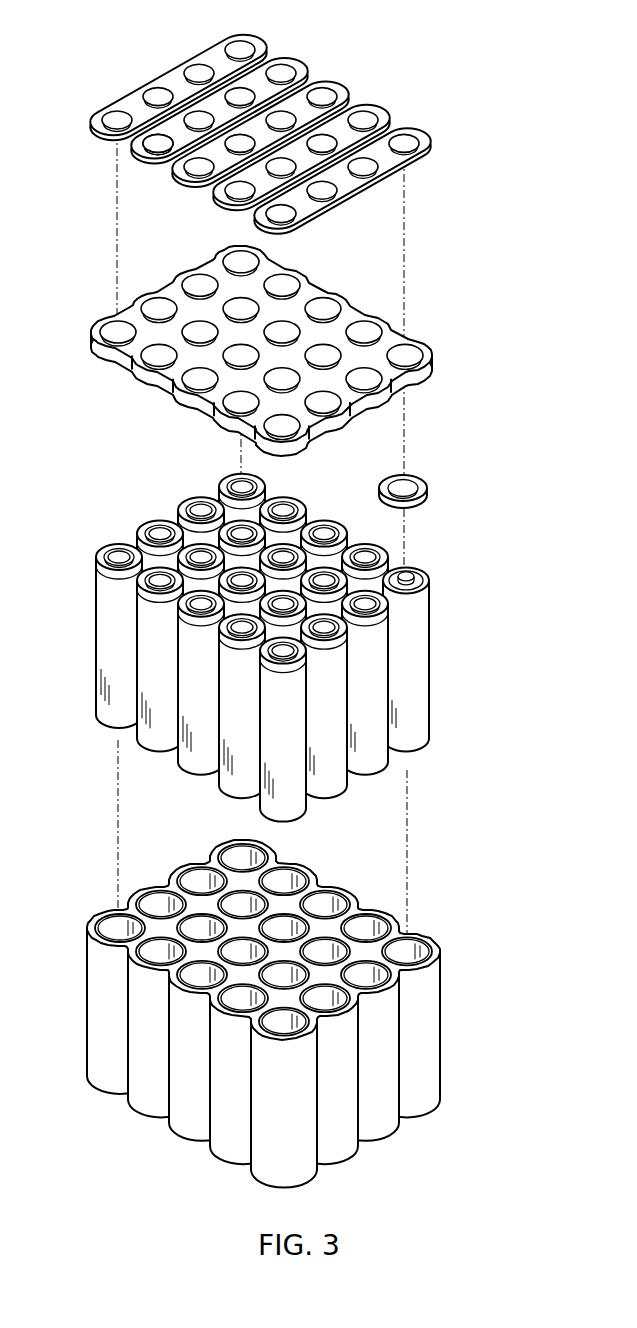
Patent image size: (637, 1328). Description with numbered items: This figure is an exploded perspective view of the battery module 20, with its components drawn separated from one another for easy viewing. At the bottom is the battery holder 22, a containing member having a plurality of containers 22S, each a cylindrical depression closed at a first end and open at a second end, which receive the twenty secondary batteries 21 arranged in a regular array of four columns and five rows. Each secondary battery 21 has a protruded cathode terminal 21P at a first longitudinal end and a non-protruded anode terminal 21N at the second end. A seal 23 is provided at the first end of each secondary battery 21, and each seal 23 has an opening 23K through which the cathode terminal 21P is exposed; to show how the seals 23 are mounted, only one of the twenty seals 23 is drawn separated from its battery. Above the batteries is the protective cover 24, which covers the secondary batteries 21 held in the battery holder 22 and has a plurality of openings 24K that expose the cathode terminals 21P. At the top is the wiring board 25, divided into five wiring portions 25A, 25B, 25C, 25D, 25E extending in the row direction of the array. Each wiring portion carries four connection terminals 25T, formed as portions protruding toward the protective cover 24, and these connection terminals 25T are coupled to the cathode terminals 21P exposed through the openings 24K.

The battery module 20 is at (286, 604).
The secondary batteries 21 is at (297, 648).
The cathode terminal 21P is at (409, 576).
The anode terminal 21N is at (418, 756).
The battery holder 22 is at (273, 1014).
The containers 22S is at (112, 923).
The seals 23 is at (438, 466).
The opening 23K is at (410, 476).
The protective cover 24 is at (235, 351).
The openings 24K is at (112, 328).
The wiring board 25 is at (266, 127).
The wiring portion 25A is at (127, 102).
The wiring portion 25B is at (298, 56).
The wiring portion 25C is at (338, 82).
The wiring portion 25D is at (378, 108).
The wiring portion 25E is at (418, 128).
The connection terminals 25T is at (162, 152).